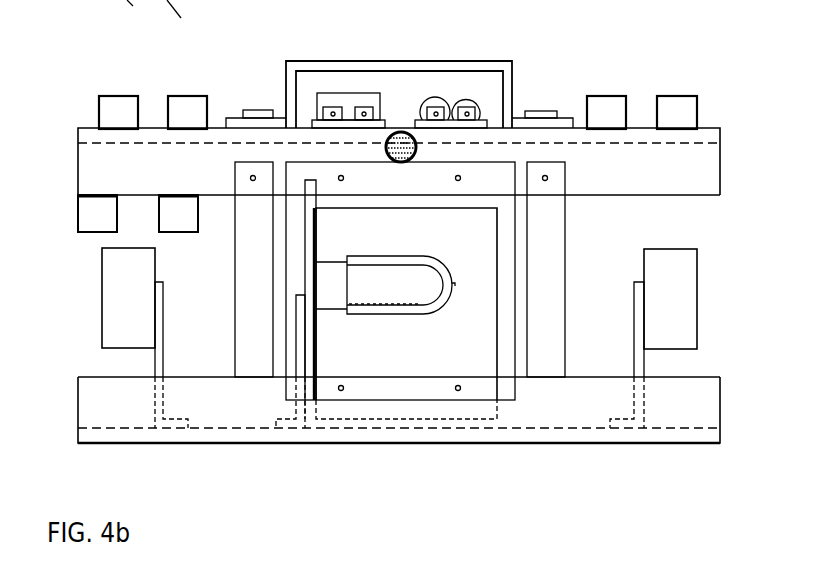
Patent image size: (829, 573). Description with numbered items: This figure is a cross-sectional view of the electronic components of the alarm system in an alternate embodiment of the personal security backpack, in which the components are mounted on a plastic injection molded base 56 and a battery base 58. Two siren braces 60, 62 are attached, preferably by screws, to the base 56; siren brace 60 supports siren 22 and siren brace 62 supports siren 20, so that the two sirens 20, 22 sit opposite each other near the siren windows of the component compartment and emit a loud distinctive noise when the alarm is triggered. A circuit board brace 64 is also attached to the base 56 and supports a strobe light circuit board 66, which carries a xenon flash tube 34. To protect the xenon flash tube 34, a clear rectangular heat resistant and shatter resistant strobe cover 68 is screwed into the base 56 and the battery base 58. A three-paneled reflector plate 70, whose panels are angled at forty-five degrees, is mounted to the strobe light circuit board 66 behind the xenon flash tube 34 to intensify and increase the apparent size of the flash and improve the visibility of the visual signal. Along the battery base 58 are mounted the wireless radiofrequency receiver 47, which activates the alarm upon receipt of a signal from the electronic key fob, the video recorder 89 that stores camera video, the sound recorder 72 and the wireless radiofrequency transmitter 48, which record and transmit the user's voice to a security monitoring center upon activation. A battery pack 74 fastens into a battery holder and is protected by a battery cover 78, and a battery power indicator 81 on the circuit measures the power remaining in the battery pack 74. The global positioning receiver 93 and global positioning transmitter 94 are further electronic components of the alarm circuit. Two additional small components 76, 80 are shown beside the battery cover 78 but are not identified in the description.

The siren 20 is at (102, 282).
The siren 22 is at (700, 287).
The xenon flash tube 34 is at (431, 313).
The wireless radiofrequency receiver 47 is at (127, 112).
The wireless radiofrequency transmitter 48 is at (682, 115).
The plastic injection molded base 56 is at (720, 410).
The battery base 58 is at (78, 155).
The siren brace 60 is at (632, 427).
The siren brace 62 is at (165, 418).
The circuit board brace 64 is at (277, 417).
The strobe light circuit board 66 is at (316, 345).
The strobe cover 68 is at (515, 400).
The three-paneled reflector plate 70 is at (498, 218).
The sound recorder 72 is at (605, 112).
The battery pack 74 is at (372, 90).
The terminal pad 76 is at (488, 120).
The battery cover 78 is at (296, 58).
The terminal pad 80 is at (253, 107).
The battery power indicator 81 is at (403, 160).
The video recorder 89 is at (197, 112).
The global positioning receiver 93 is at (98, 210).
The global positioning transmitter 94 is at (170, 208).